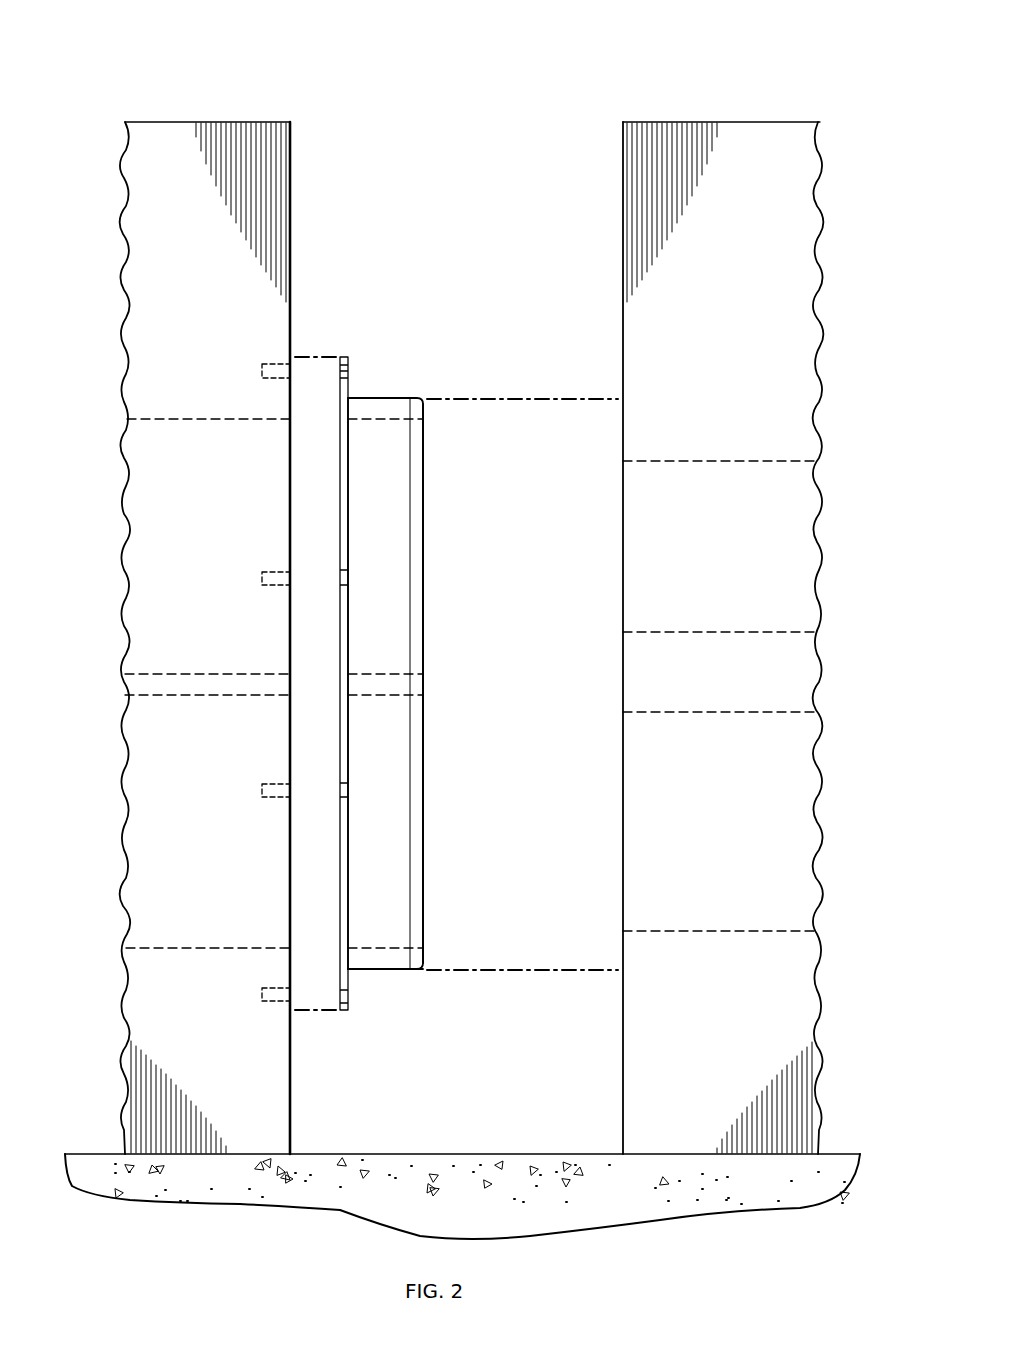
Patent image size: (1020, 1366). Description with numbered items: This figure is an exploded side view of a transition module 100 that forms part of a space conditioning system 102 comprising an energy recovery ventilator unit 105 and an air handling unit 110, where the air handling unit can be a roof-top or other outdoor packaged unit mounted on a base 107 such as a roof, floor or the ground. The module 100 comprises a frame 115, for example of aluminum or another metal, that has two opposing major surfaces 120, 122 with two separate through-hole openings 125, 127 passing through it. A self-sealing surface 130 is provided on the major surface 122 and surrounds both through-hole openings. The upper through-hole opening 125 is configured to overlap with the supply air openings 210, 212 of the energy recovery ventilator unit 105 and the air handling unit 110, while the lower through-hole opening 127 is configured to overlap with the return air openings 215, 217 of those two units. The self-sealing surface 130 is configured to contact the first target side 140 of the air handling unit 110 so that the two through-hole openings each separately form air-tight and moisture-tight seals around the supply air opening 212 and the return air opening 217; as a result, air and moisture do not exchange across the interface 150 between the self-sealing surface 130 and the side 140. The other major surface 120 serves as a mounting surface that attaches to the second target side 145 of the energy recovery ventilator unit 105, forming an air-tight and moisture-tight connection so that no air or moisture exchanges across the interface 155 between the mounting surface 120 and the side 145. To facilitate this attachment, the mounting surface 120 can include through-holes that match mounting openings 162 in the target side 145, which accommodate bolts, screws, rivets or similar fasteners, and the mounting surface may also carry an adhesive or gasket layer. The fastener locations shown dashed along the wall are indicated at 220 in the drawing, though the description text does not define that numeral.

The transition module 100 is at (438, 306).
The space conditioning system 102 is at (806, 60).
The energy recovery ventilator unit 105 is at (166, 120).
The base 107 is at (482, 1154).
The air handling unit 110 is at (746, 120).
The frame 115 is at (394, 398).
The mounting surface 120 is at (350, 980).
The major surface 122 is at (424, 820).
The upper through-hole opening 125 is at (386, 462).
The lower through-hole opening 127 is at (386, 738).
The self-sealing surface 130 is at (424, 896).
The first target side 140 is at (622, 172).
The second target side 145 is at (292, 171).
The interface 150 is at (601, 1010).
The interface 155 is at (366, 1022).
The mounting openings 162 is at (345, 372).
The supply air opening 210 is at (158, 470).
The supply air opening 212 is at (778, 508).
The return air opening 215 is at (158, 745).
The return air opening 217 is at (778, 779).
The fastener 220 is at (280, 367).